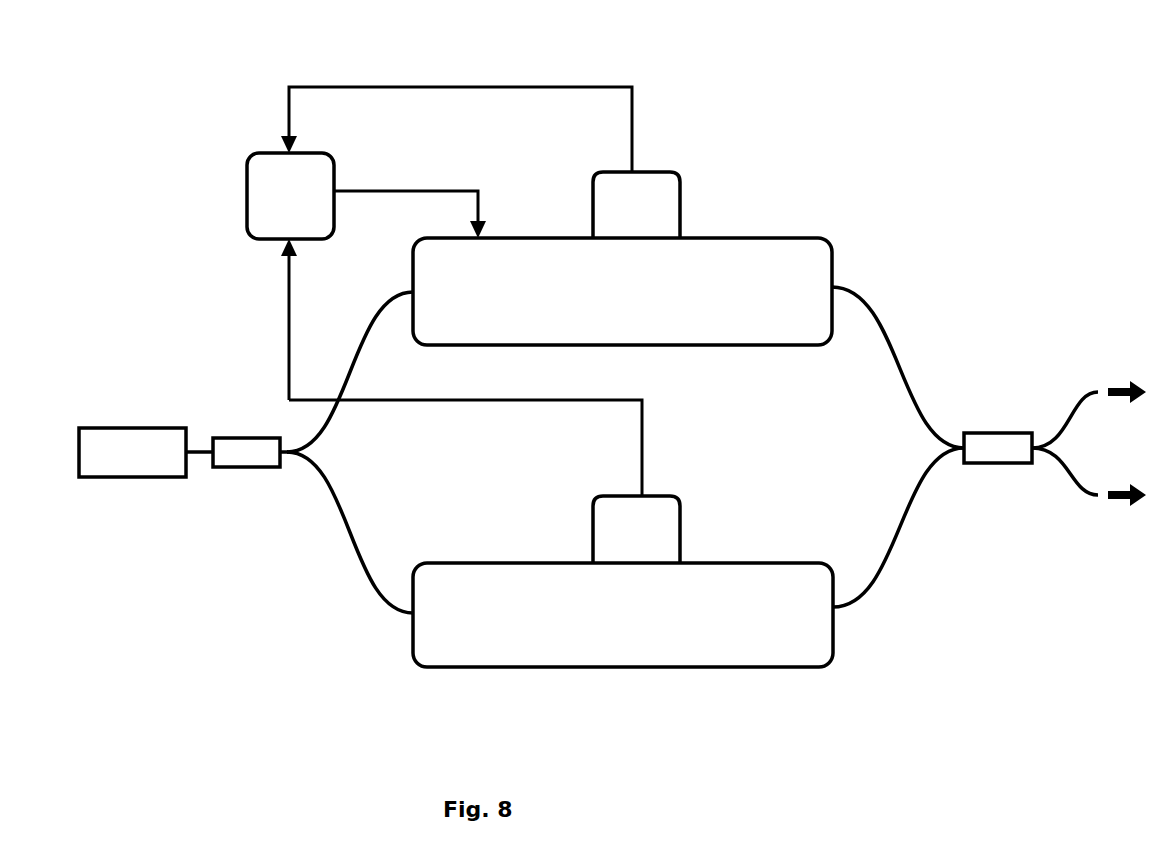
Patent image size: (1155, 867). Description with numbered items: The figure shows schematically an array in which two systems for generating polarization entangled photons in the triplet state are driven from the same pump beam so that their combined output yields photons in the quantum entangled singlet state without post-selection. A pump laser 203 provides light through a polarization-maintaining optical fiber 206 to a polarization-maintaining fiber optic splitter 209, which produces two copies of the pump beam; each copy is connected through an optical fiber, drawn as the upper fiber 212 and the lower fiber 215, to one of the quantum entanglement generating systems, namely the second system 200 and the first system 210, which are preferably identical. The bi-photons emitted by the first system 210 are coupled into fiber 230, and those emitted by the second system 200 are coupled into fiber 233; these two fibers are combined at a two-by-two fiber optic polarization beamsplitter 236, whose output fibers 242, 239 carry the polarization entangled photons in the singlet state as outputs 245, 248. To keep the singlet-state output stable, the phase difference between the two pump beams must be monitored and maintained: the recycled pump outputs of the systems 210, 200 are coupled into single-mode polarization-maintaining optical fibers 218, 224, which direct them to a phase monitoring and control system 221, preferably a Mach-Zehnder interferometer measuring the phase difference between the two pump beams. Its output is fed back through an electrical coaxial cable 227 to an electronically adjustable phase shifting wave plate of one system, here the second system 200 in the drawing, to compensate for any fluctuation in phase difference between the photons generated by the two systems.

The second system 200 is at (746, 228).
The pump laser 203 is at (137, 487).
The polarization-maintaining optical fiber 206 is at (203, 468).
The polarization-maintaining fiber optic splitter 209 is at (252, 487).
The first system 210 is at (642, 677).
The upper waveguide arm 212 is at (372, 325).
The lower waveguide arm 215 is at (375, 612).
The single-mode polarization-maintaining optical fiber 218 is at (652, 448).
The phase monitoring and control system 221 is at (232, 201).
The single-mode polarization-maintaining optical fiber 224 is at (451, 75).
The electrical coaxial cable 227 is at (411, 183).
The fiber 230 is at (860, 620).
The fiber 233 is at (880, 303).
The 2×2 fiber optic polarization beamsplitter 236 is at (1003, 477).
The output fiber 239 is at (1078, 507).
The output fiber 242 is at (1078, 373).
The output 245 is at (1122, 370).
The output 248 is at (1122, 520).